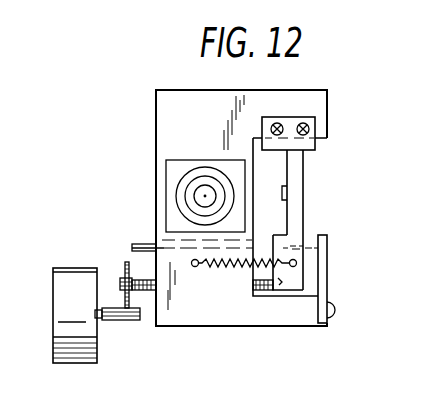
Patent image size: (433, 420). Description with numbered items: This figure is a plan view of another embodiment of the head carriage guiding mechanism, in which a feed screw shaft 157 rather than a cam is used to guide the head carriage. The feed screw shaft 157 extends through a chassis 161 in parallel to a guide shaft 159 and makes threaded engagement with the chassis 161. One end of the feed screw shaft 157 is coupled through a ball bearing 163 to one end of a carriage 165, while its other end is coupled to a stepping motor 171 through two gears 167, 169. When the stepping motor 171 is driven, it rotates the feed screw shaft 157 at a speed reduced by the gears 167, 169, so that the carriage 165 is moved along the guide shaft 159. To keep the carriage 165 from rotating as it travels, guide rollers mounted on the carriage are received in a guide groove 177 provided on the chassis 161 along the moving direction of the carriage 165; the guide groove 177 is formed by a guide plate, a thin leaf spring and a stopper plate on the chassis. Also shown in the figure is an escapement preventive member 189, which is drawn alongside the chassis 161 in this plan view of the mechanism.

The feed screw shaft 157 is at (138, 275).
The guide shaft 159 is at (140, 246).
The chassis 161 is at (218, 312).
The ball bearing 163 is at (280, 292).
The carriage 165 is at (300, 176).
The gear 167 is at (125, 263).
The gear 169 is at (124, 322).
The stepping motor 171 is at (80, 355).
The guide groove 177 is at (329, 113).
The escapement preventive member 189 is at (327, 252).